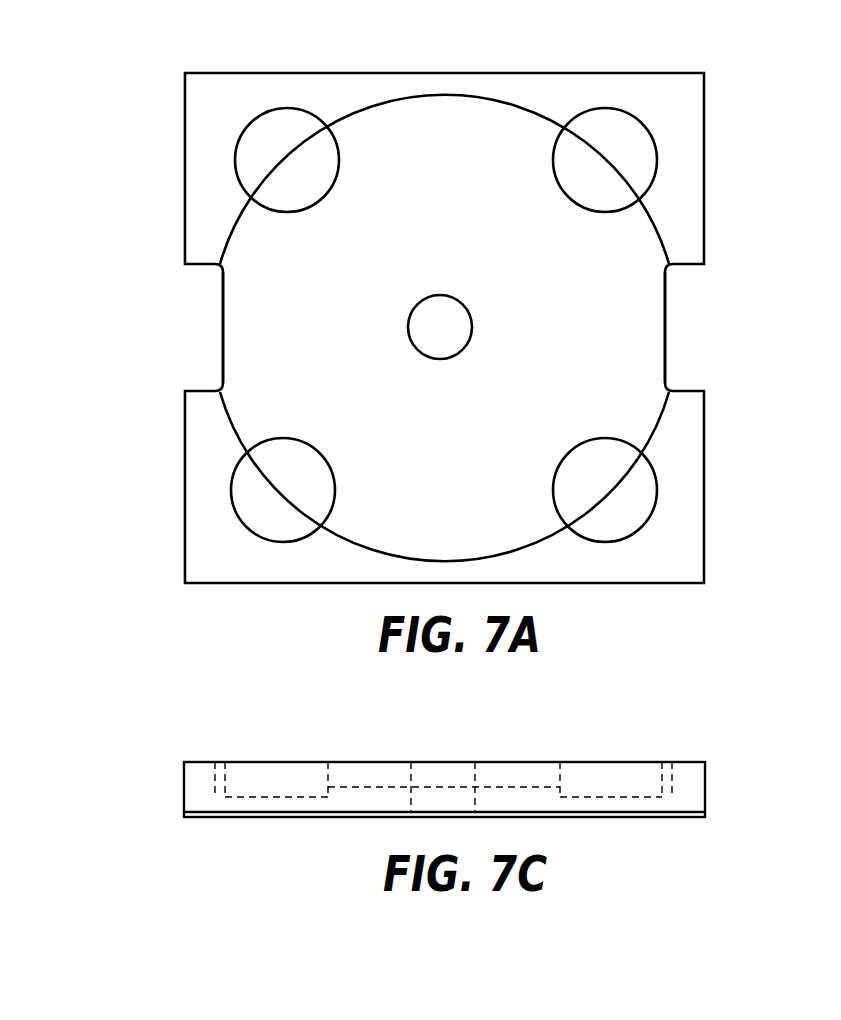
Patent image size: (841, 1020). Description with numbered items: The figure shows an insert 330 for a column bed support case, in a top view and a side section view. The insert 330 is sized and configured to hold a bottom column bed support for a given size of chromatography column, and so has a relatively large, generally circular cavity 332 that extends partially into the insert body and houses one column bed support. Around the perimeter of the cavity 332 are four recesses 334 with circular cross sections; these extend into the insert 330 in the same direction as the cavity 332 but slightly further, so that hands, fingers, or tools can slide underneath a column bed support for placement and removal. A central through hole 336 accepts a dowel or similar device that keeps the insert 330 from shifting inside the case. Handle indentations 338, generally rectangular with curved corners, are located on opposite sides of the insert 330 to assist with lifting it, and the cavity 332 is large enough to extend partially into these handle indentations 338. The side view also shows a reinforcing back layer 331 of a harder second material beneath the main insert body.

In FIG. 7A, the insert 330 is at (733, 53).
In FIG. 7C, the insert 330 is at (715, 835).
In FIG. 7C, the reinforcing back layer 331 is at (315, 818).
In FIG. 7A, the cavity 332 is at (460, 247).
In FIG. 7C, the cavity 332 is at (373, 772).
In FIG. 7A, the recesses 334 is at (302, 170).
In FIG. 7C, the recesses 334 is at (268, 772).
In FIG. 7A, the through hole 336 is at (462, 344).
In FIG. 7C, the through hole 336 is at (452, 770).
In FIG. 7A, the handle indentations 338 is at (206, 388).
In FIG. 7C, the handle indentations 338 is at (223, 818).